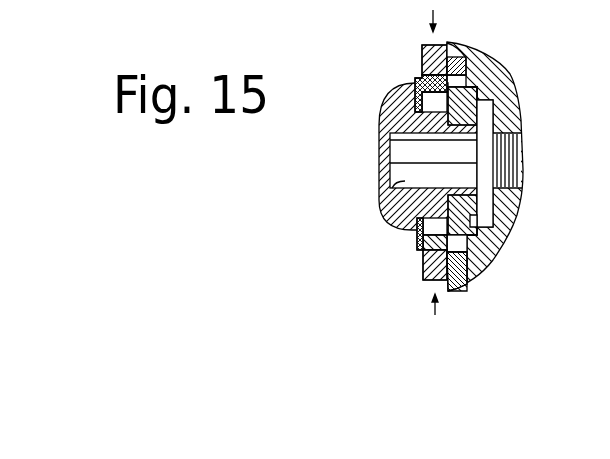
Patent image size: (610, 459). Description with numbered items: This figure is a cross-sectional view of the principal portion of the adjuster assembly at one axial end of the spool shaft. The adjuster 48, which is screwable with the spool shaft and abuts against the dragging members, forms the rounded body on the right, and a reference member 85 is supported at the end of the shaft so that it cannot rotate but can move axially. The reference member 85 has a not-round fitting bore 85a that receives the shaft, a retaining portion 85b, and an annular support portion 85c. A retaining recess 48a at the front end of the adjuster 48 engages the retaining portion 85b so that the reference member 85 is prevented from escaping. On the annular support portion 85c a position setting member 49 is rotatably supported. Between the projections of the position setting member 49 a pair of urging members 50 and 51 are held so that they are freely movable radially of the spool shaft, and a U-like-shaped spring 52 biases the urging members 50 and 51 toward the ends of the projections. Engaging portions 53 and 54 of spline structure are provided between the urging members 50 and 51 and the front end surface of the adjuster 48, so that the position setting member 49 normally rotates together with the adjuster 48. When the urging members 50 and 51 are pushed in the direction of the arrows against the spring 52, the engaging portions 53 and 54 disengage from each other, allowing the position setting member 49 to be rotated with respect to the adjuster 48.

The adjuster 48 is at (504, 74).
The retaining recess 48a is at (500, 242).
The position setting member 49 is at (418, 247).
The urging member 50 is at (423, 48).
The urging member 51 is at (424, 278).
The U-like-shaped spring 52 is at (416, 82).
The engaging portion 53 is at (458, 57).
The engaging portion 54 is at (456, 270).
The reference member 85 is at (377, 131).
The not-round fitting bore 85a is at (392, 184).
The retaining portion 85b is at (484, 227).
The annular support portion 85c is at (417, 236).